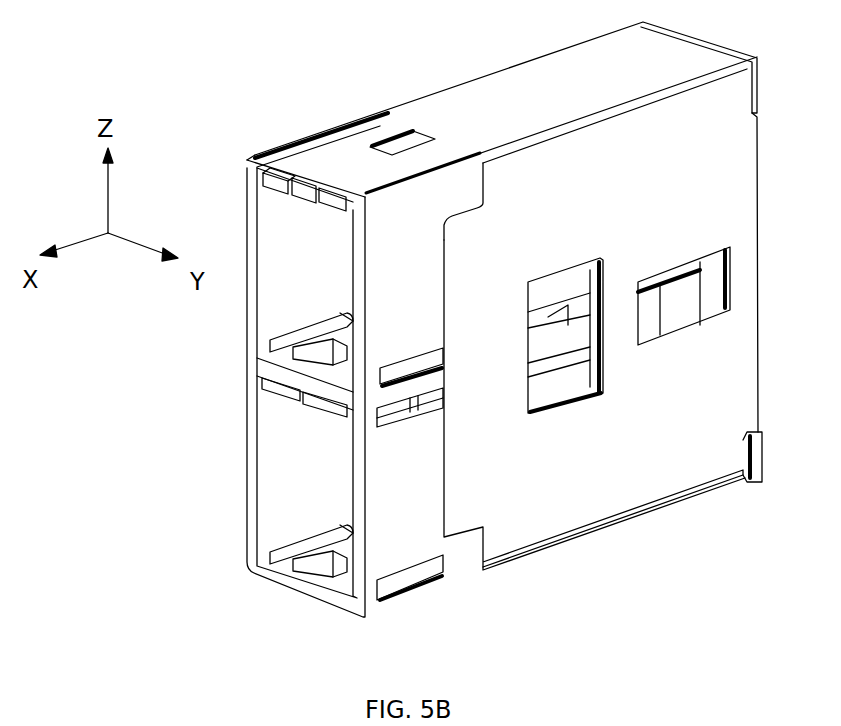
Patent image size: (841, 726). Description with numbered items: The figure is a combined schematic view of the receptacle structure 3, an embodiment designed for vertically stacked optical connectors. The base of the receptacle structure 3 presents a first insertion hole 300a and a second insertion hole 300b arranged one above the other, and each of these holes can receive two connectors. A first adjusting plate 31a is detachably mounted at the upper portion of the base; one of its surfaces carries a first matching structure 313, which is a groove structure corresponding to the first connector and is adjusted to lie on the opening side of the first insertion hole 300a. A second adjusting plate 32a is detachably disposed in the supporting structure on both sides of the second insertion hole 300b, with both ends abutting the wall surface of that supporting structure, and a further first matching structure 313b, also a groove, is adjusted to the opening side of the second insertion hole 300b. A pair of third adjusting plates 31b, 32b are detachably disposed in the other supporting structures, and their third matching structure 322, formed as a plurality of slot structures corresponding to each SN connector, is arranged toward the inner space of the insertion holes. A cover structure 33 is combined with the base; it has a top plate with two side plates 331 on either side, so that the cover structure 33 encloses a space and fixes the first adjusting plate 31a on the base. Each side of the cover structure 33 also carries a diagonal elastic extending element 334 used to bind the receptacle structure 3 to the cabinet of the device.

The receptacle structure 3 is at (229, 117).
The cover structure 33 is at (492, 87).
The first adjusting plate 31a is at (303, 142).
The first matching structure 313 is at (265, 185).
The first insertion hole 300a is at (331, 277).
The second insertion hole 300b is at (331, 472).
The first matching structure 313b is at (270, 392).
The third matching structure 322 is at (350, 345).
The side plate 331 is at (647, 495).
The diagonal elastic extending element 334 is at (688, 318).
The second adjusting plate 32a is at (437, 363).
The third adjusting plate 31b is at (413, 410).
The third adjusting plate 32b is at (423, 580).